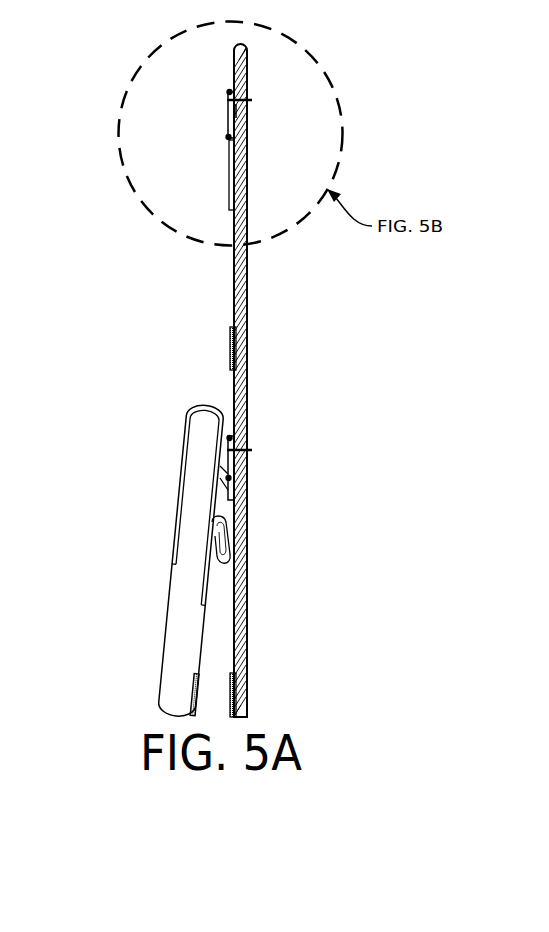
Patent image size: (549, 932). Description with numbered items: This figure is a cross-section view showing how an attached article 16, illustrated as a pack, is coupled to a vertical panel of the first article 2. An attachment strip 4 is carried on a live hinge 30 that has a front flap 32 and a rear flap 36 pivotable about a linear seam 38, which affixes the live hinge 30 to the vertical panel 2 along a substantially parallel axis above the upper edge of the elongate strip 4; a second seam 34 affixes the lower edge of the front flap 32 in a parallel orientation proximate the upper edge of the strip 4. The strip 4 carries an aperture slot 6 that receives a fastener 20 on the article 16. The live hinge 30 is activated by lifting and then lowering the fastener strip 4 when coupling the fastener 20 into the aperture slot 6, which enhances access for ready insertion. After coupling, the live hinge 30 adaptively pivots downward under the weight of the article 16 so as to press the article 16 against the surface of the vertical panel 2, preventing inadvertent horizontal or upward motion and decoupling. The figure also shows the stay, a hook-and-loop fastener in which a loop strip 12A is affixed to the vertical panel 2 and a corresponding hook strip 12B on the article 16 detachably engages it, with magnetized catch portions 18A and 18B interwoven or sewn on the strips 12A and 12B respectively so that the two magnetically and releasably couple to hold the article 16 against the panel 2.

The vertical panel 2 is at (248, 338).
The attachment strip 4 is at (228, 210).
The aperture slot 6 is at (230, 185).
The hook or loop strip 12A is at (247, 516).
The magnetic tab 18A is at (230, 349).
The hook or loop strip 12B is at (194, 695).
The second portion of the catch 18B is at (194, 695).
The attached article 16 is at (191, 561).
The fastener 20 is at (195, 507).
The live hinge 30 is at (228, 82).
The front flap 32 is at (228, 104).
The second seam 34 is at (226, 490).
The rear flap 36 is at (238, 117).
The linear seam 38 is at (243, 98).